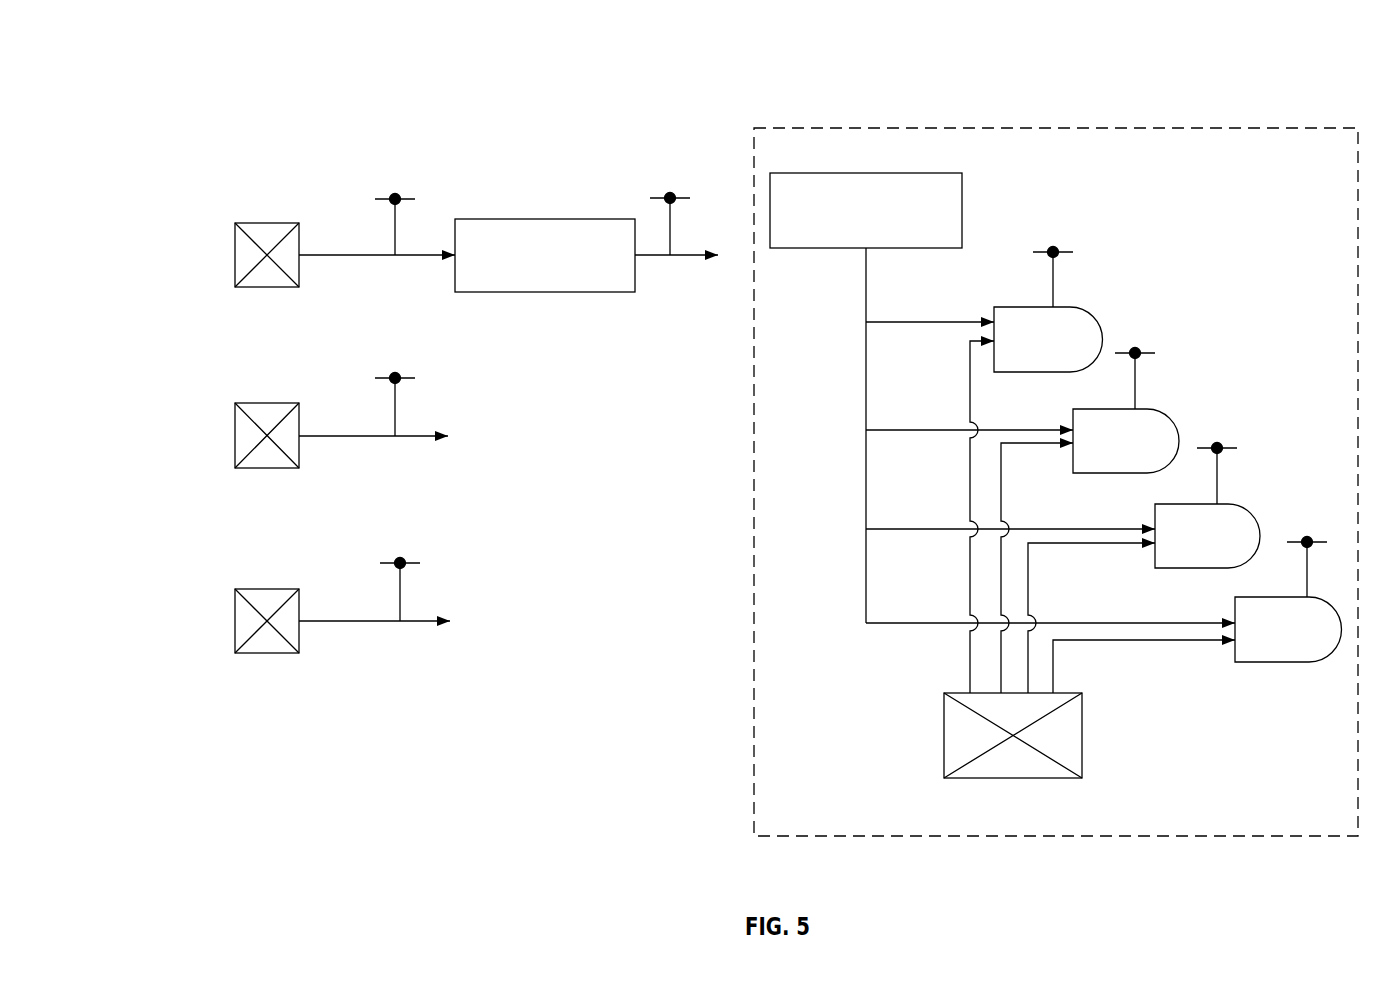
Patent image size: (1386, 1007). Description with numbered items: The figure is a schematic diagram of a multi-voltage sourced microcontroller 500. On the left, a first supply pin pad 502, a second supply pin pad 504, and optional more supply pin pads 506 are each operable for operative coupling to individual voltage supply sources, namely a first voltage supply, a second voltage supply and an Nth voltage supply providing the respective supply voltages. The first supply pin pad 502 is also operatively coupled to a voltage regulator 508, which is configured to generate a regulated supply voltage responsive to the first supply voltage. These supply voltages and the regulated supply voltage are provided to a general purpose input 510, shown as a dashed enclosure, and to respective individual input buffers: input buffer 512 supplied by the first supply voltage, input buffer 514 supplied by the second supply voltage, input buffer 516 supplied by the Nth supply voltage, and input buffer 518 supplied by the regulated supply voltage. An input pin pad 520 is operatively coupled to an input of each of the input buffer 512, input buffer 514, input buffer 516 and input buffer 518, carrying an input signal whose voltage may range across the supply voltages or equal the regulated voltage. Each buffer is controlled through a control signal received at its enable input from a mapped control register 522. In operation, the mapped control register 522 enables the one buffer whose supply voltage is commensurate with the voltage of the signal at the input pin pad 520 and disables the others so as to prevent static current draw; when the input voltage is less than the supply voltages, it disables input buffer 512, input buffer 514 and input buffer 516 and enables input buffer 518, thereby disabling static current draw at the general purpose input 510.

The multi-voltage sourced microcontroller 500 is at (1243, 55).
The first supply pin pad 502 is at (283, 351).
The second supply pin pad 504 is at (302, 534).
The optional more supply pin pads 506 is at (322, 719).
The voltage regulator 508 is at (603, 281).
The general purpose input 510 is at (1340, 167).
The input buffer 512 is at (1057, 354).
The input buffer 514 is at (1134, 454).
The input buffer 516 is at (1216, 551).
The input buffer 518 is at (1298, 642).
The input pin pad 520 is at (1088, 816).
The mapped control register 522 is at (918, 237).